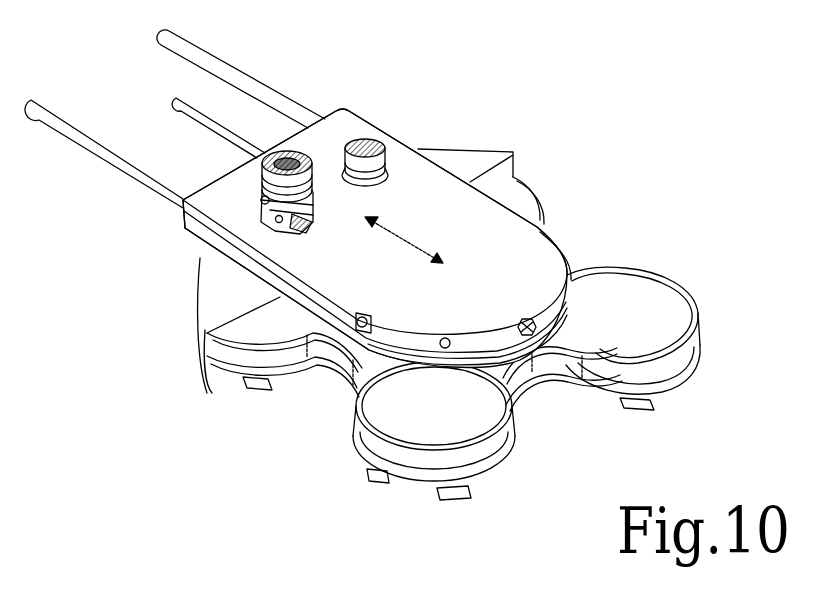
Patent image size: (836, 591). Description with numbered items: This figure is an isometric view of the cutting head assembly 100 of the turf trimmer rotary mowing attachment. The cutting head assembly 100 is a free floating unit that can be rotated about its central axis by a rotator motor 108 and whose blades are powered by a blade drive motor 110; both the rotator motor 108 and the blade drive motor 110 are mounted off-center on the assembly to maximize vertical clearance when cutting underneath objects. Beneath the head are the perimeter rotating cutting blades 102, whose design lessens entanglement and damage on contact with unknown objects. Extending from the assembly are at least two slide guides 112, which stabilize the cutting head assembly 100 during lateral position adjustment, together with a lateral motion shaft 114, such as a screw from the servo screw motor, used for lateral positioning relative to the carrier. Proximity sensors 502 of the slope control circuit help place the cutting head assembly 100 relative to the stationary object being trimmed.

The cutting head assembly 100 is at (630, 180).
The rotating cutting blades 102 is at (250, 390).
The rotator motor 108 is at (374, 138).
The blade drive motor 110 is at (292, 150).
The slide guides 112 is at (223, 70).
The lateral motion shaft 114 is at (172, 100).
The proximity sensor 502 is at (527, 329).